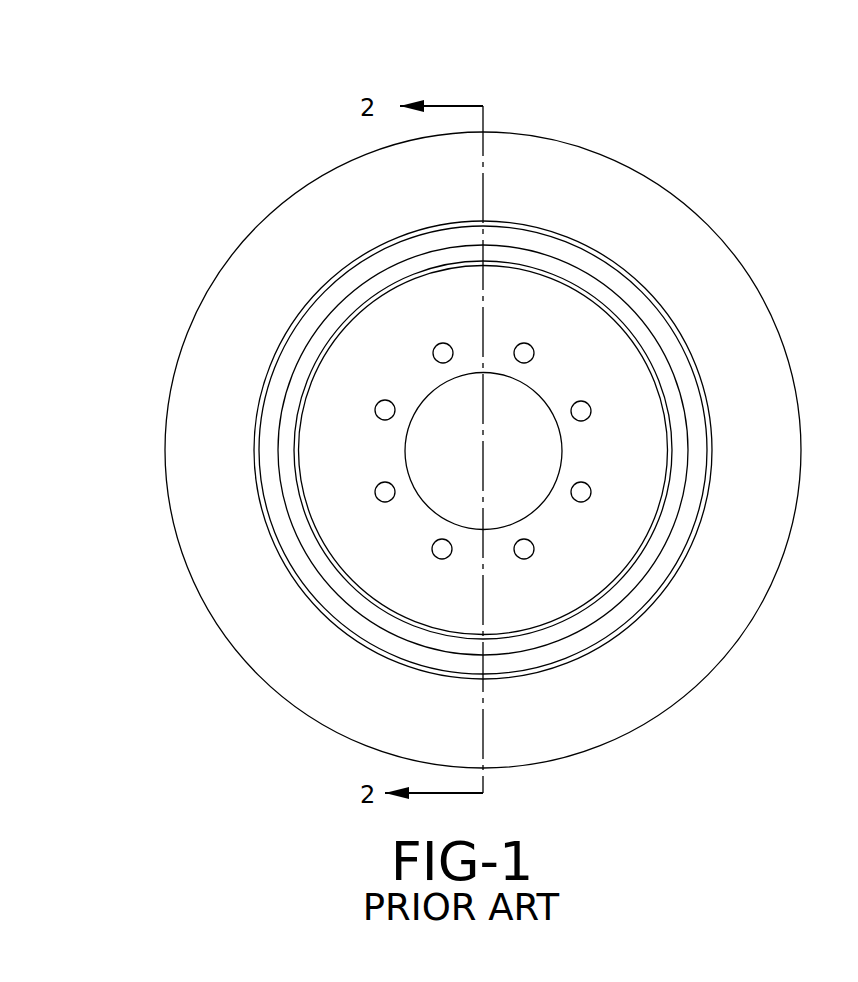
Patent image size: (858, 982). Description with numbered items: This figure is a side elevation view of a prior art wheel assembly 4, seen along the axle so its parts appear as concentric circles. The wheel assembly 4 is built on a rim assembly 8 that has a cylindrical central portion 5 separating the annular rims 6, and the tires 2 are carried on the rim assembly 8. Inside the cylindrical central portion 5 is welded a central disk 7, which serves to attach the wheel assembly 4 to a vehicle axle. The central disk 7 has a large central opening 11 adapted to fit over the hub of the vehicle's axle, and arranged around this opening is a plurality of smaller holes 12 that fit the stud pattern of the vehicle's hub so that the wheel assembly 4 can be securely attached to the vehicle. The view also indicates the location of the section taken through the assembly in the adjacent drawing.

The tire 2 is at (263, 240).
The wheel assembly 4 is at (626, 139).
The cylindrical central portion 5 is at (592, 300).
The annular rim 6 is at (313, 320).
The central disk 7 is at (618, 393).
The rim assembly 8 is at (575, 565).
The central opening 11 is at (412, 488).
The holes 12 is at (385, 407).